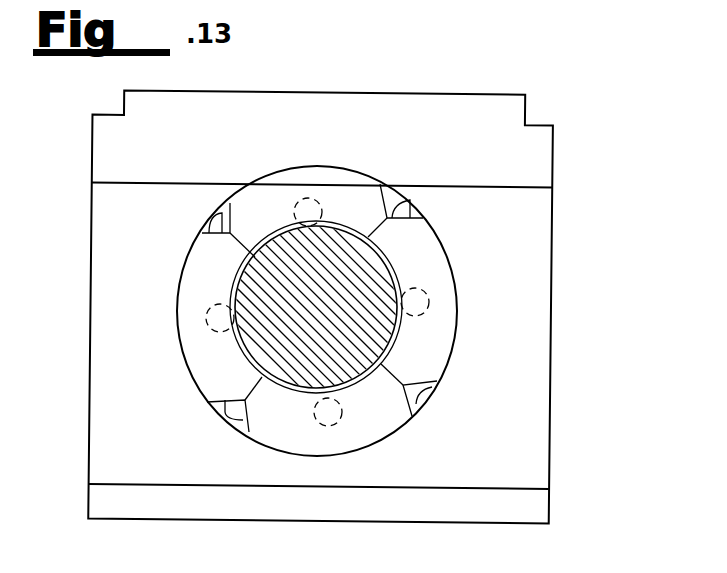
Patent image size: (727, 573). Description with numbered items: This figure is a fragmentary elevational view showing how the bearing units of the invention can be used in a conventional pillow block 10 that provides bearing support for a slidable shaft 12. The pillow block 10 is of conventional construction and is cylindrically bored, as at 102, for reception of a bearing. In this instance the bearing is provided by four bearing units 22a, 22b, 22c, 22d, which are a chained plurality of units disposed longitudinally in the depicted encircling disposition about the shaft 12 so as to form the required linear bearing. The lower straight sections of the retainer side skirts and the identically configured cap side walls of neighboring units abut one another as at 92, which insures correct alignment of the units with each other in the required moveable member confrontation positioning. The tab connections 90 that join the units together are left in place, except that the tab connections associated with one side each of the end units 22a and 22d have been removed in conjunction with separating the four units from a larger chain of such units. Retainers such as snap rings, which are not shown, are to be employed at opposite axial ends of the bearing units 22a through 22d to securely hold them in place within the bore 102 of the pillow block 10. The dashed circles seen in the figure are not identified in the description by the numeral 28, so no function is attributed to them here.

The pillow block 10 is at (553, 238).
The slidable shaft 12 is at (384, 337).
The bolt holes 28 is at (428, 305).
The bearing unit 22a is at (357, 420).
The bearing unit 22b is at (201, 376).
The bearing unit 22c is at (327, 196).
The bearing unit 22d is at (393, 257).
The tab connection 90 is at (218, 213).
The abutment 92 is at (375, 222).
The cylindrical bore 102 is at (425, 395).